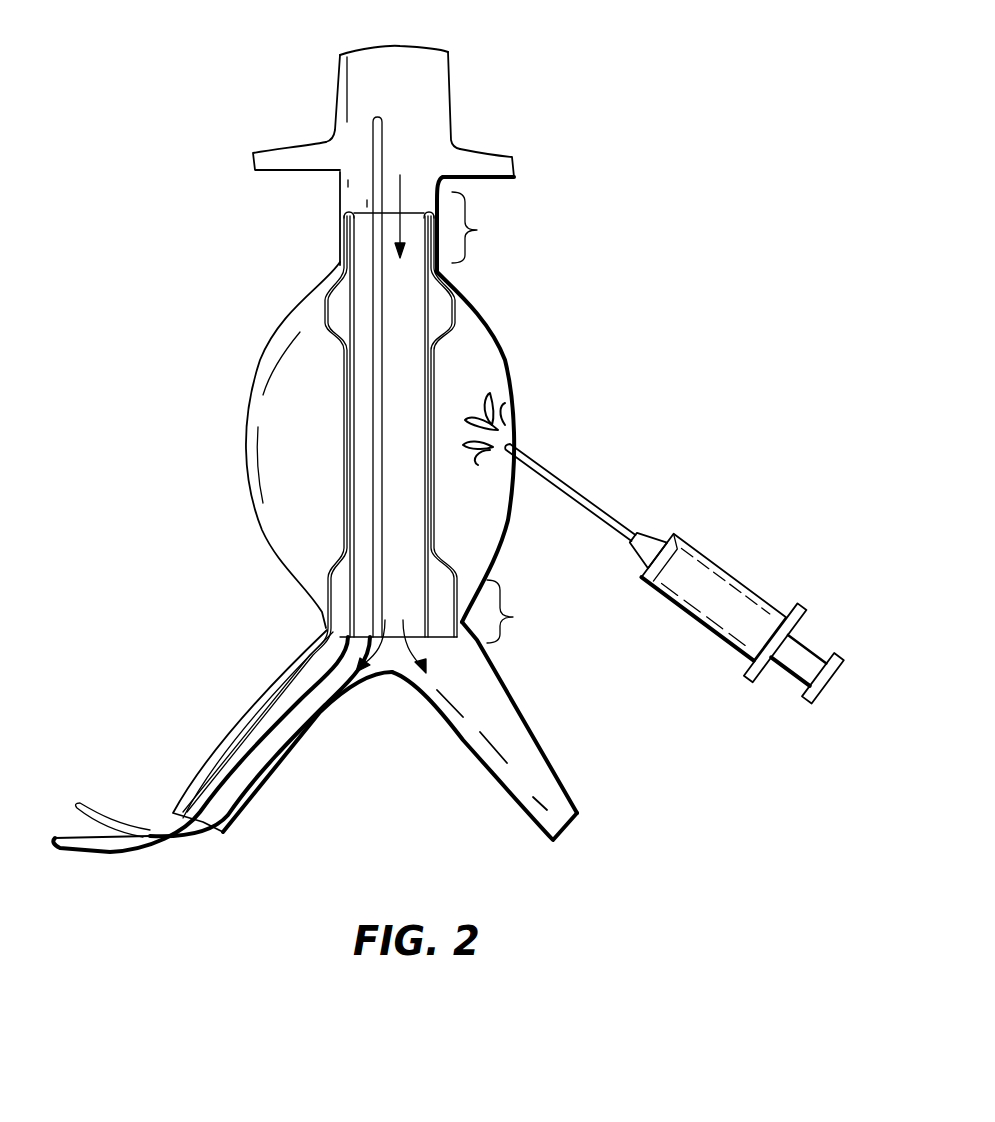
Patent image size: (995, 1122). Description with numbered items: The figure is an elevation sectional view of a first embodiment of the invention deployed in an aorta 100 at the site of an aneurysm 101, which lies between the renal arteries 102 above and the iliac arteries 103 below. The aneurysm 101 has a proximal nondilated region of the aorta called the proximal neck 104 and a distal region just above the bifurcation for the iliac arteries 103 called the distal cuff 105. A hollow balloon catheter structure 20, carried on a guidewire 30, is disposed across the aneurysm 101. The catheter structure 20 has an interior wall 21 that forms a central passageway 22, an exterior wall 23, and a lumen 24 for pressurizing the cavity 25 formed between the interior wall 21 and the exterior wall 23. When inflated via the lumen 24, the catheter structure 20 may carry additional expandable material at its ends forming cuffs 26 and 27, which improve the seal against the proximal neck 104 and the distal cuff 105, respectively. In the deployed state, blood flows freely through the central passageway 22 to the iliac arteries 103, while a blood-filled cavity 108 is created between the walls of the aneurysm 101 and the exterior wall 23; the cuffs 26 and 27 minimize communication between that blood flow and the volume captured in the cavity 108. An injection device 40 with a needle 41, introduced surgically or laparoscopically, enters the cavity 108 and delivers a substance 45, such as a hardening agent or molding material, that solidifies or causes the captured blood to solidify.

The hollow balloon catheter structure 20 is at (312, 484).
The interior wall 21 is at (350, 420).
The central passageway 22 is at (427, 427).
The exterior wall 23 is at (338, 342).
The lumen 24 is at (112, 828).
The cavity 25 is at (333, 303).
The cuff 26 is at (467, 290).
The cuff 27 is at (462, 563).
The guidewire 30 is at (369, 127).
The injection device 40 is at (674, 574).
The needle 41 is at (604, 508).
The substance 45 is at (508, 418).
The aorta 100 is at (450, 63).
The aneurysm 101 is at (500, 340).
The renal arteries 102 is at (268, 151).
The iliac arteries 103 is at (233, 730).
The proximal neck 104 is at (492, 227).
The distal cuff 105 is at (527, 611).
The blood-filled cavity 108 is at (478, 523).